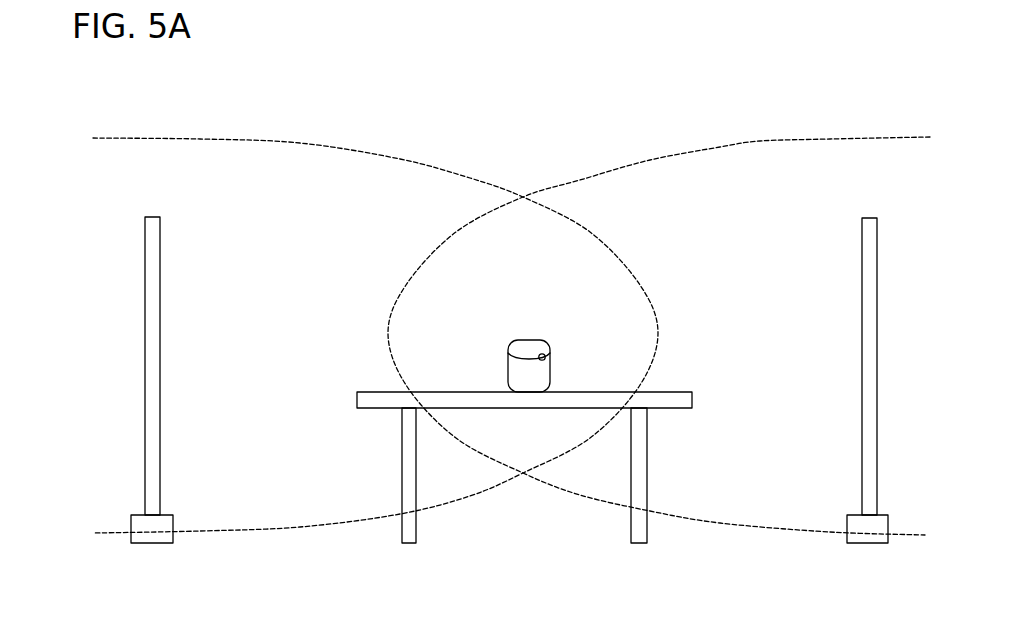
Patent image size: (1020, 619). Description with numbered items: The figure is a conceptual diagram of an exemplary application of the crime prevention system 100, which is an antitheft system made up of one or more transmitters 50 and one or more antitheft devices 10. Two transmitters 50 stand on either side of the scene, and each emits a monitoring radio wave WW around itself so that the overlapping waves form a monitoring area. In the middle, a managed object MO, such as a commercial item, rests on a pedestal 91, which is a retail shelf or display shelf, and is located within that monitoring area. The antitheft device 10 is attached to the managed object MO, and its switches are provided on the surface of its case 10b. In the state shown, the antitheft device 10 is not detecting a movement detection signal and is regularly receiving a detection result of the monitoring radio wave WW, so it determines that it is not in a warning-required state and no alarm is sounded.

The crime prevention system 100 is at (523, 153).
The monitoring radio wave WW is at (293, 140).
The transmitter 50 is at (152, 255).
The pedestal 91 is at (663, 402).
The antitheft device 10 is at (548, 355).
The case 10b is at (538, 357).
The managed object MO is at (532, 338).